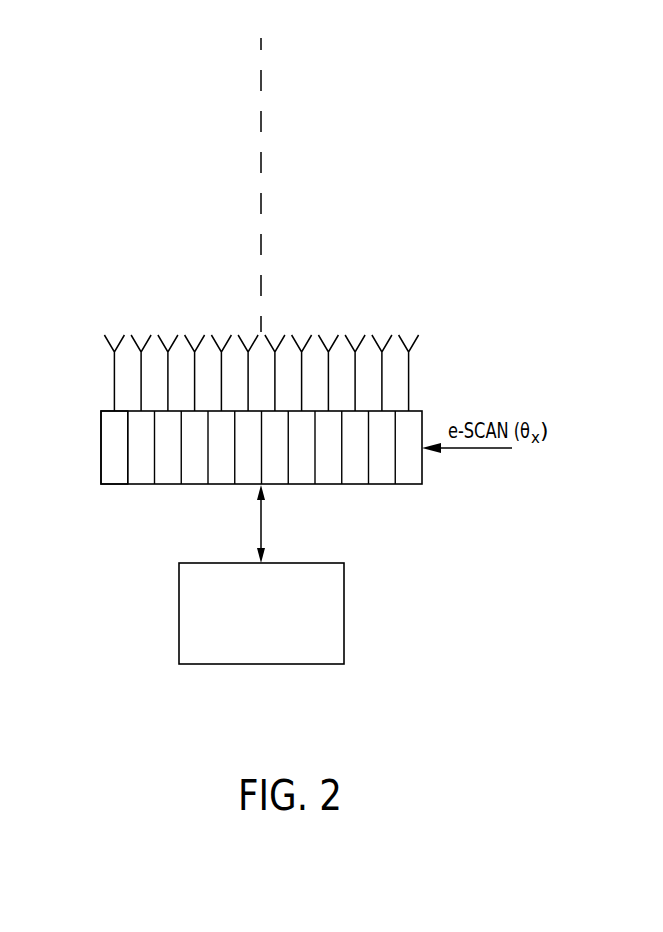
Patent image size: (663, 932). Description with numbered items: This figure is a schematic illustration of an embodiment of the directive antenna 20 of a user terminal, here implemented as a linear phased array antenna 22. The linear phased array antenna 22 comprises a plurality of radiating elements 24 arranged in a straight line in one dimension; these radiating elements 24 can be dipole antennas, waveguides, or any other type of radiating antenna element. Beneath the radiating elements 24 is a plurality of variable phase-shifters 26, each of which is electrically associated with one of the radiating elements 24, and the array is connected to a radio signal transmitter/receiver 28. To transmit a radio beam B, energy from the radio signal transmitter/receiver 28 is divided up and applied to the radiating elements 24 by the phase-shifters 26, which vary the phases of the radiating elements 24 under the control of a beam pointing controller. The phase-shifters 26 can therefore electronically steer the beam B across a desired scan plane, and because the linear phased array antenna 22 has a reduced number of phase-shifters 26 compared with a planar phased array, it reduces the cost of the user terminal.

The directive antenna 20 is at (416, 197).
The linear phased array antenna 22 is at (100, 447).
The radiating elements 24 is at (162, 338).
The variable phase-shifters 26 is at (113, 472).
The radio signal transmitter/receiver 28 is at (179, 615).
The radio beam B is at (240, 88).